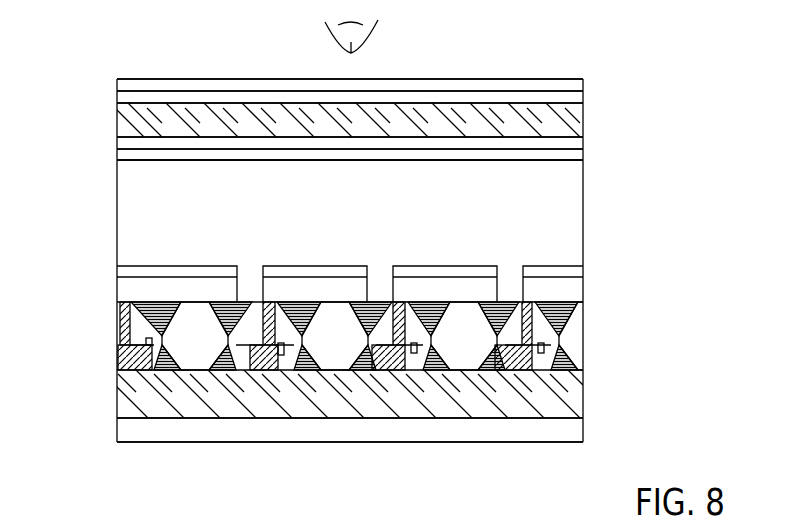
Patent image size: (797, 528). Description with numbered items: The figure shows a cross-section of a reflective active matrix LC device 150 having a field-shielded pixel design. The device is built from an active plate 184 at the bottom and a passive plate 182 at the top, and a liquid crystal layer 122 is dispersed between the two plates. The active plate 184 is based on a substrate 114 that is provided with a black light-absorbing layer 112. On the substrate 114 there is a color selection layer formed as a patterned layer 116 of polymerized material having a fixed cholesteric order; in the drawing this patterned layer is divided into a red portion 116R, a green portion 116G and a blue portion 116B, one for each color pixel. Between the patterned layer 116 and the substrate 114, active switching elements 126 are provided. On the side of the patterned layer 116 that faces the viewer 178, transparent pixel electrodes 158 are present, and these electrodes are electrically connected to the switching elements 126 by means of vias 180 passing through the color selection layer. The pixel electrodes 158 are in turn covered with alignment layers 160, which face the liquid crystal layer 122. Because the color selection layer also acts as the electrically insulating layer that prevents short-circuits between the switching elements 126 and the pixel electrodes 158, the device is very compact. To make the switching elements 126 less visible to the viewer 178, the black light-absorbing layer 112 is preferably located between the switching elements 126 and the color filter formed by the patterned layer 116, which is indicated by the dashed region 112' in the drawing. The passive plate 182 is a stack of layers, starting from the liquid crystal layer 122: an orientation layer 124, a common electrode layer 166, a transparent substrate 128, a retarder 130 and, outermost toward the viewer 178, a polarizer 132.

The reflective active matrix LC device 150 is at (84, 78).
The viewer 178 is at (358, 38).
The polarizer 132 is at (585, 84).
The retarder 130 is at (583, 101).
The transparent substrate 128 is at (584, 121).
The common electrode layer 166 is at (583, 145).
The orientation layer 124 is at (583, 160).
The passive plate 182 is at (678, 82).
The liquid crystal layer 122 is at (583, 205).
The alignment layers 160 is at (181, 267).
The transparent pixel electrodes 158 is at (217, 285).
The patterned layer 116 is at (376, 299).
The red pixel portion of patterned layer 116R is at (160, 308).
The green pixel portion of patterned layer 116G is at (294, 308).
The blue pixel portion of patterned layer 116B is at (425, 308).
The vias 180 is at (120, 344).
The dashed region 112' is at (72, 365).
The substrate 114 is at (583, 396).
The light-absorbing layer 112 is at (376, 432).
The active switching elements 126 is at (138, 372).
The active plate 184 is at (678, 265).